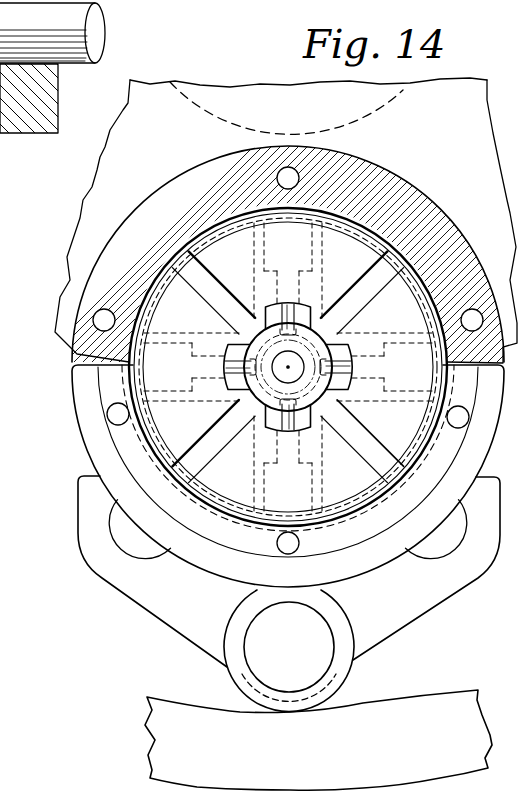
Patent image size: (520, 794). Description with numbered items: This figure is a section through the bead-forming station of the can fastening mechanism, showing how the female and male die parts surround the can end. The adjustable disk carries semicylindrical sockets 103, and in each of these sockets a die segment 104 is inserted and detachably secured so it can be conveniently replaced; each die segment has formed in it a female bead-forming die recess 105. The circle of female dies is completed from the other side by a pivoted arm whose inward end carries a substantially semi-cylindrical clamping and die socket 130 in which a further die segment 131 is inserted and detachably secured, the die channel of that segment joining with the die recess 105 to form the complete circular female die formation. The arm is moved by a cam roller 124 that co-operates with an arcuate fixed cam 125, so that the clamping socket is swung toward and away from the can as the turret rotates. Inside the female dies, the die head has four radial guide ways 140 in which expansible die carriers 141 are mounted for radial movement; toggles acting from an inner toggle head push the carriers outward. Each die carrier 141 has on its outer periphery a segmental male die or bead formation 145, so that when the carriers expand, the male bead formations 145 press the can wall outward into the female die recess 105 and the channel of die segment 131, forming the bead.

The semicylindrical sockets 103 is at (185, 151).
The die segment 104 is at (422, 267).
The female bead-forming die recess 105 is at (402, 244).
The cam roller 124 is at (243, 682).
The arcuate fixed cam 125 is at (402, 717).
The clamping and die socket 130 is at (87, 428).
The die segment 131 is at (106, 399).
The radial guide ways 140 is at (387, 200).
The expansible die carriers 141 is at (233, 247).
The segmental male die or bead formation 145 is at (148, 297).